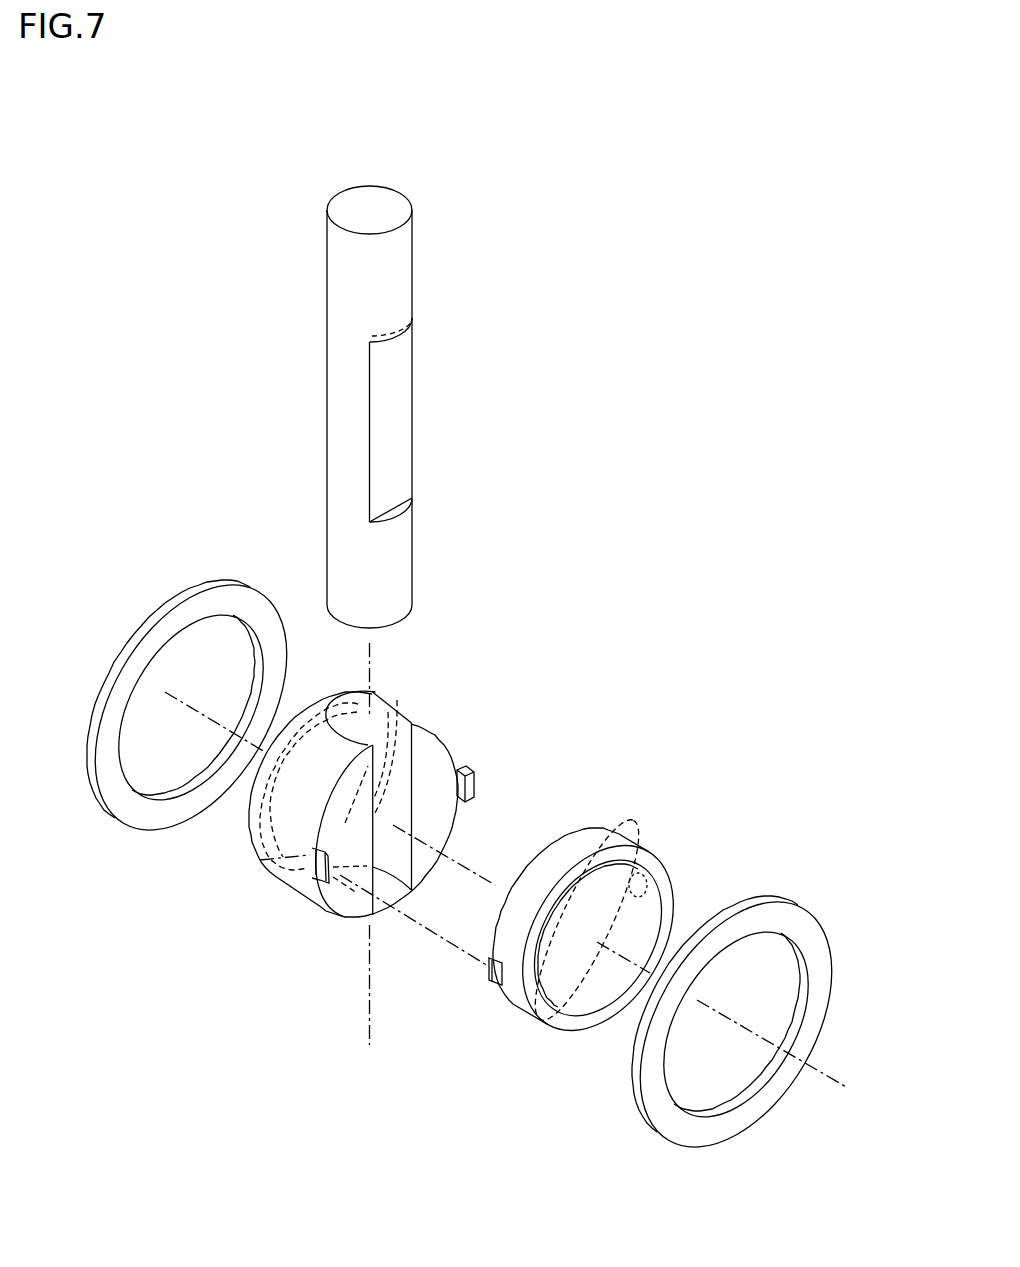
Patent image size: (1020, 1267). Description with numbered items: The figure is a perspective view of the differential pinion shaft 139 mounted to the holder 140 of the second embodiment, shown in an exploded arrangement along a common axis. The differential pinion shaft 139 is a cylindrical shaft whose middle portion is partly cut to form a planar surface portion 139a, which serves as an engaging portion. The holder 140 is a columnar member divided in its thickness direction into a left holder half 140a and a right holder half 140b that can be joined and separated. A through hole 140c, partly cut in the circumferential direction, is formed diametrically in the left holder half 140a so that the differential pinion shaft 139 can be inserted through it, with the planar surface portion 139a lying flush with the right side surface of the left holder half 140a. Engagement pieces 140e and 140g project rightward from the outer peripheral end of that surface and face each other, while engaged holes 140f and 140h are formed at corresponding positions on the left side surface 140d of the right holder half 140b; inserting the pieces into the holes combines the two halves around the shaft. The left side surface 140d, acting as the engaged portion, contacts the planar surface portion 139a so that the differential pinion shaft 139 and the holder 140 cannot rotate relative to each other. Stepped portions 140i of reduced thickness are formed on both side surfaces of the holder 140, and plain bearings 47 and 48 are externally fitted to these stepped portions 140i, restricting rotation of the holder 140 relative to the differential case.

The differential pinion shaft 139 is at (436, 407).
The planar surface portion 139a is at (403, 398).
The holder 140 is at (486, 885).
The left holder half 140a is at (437, 737).
The right holder half 140b is at (560, 860).
The through hole 140c is at (397, 718).
The left side surface 140d is at (600, 823).
The engagement piece 140e is at (315, 893).
The engaged hole 140f is at (488, 975).
The engagement piece 140g is at (467, 802).
The engaged hole 140h is at (655, 886).
The stepped portion 140i is at (262, 880).
The plain bearing 47 is at (156, 812).
The plain bearing 48 is at (717, 1132).